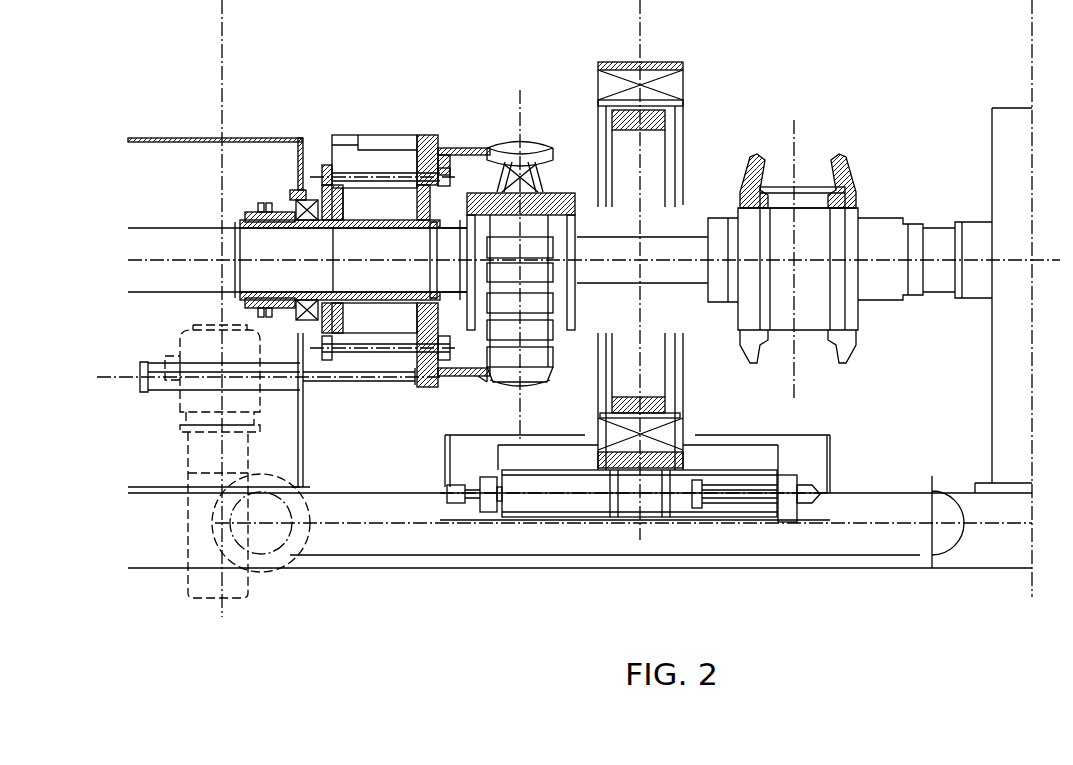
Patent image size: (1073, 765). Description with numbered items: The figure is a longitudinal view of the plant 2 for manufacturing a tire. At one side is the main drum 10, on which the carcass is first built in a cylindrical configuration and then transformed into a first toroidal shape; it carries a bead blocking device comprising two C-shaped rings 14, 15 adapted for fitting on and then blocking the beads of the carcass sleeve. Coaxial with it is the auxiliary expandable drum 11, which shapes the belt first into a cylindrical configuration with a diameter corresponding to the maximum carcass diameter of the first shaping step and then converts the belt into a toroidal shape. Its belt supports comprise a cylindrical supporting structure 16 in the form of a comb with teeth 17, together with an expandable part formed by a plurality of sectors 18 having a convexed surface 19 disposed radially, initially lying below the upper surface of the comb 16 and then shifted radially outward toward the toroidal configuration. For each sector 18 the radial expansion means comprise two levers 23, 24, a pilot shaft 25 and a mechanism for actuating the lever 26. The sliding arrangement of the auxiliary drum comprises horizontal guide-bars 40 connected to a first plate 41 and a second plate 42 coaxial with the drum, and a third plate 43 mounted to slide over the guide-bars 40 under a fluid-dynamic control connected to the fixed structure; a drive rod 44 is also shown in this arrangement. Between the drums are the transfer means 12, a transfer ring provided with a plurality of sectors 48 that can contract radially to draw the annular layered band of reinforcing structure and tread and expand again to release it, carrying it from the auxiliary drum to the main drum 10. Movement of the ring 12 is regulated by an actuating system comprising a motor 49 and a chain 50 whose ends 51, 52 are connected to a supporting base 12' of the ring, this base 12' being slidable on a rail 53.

The plant 2 is at (521, 590).
The main drum 10 is at (806, 146).
The auxiliary expandable drum 11 is at (507, 128).
The transfer means 12 is at (672, 264).
The supporting base 12' is at (635, 496).
The C-shaped ring 14 is at (745, 165).
The C-shaped ring 15 is at (842, 160).
The cylindrical supporting structure 16 is at (463, 378).
The teeth 17 is at (484, 378).
The sectors 18 is at (530, 148).
The convexed surface 19 is at (523, 383).
The lever 23 is at (495, 165).
The lever 24 is at (550, 168).
The pilot shaft 25 is at (540, 168).
The lever actuating mechanism 26 is at (432, 212).
The horizontal guide-bars 40 is at (377, 178).
The first plate 41 is at (353, 317).
The second plate 42 is at (412, 326).
The third plate 43 is at (410, 367).
The drive rod 44 is at (273, 388).
The sectors 48 is at (665, 120).
The motor 49 is at (185, 450).
The chain 50 is at (357, 558).
The chain end 51 is at (447, 490).
The chain end 52 is at (818, 500).
The rail 53 is at (358, 487).